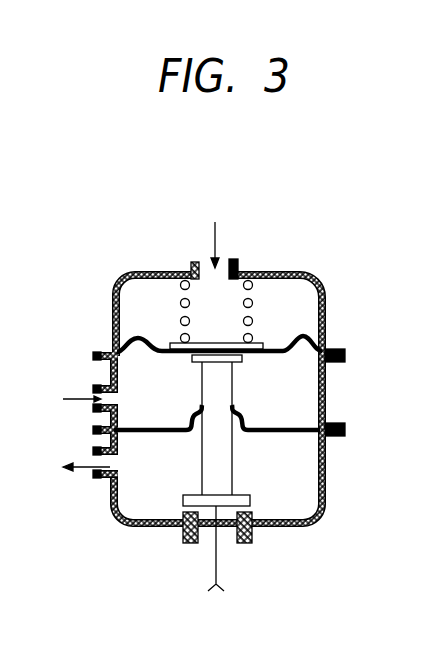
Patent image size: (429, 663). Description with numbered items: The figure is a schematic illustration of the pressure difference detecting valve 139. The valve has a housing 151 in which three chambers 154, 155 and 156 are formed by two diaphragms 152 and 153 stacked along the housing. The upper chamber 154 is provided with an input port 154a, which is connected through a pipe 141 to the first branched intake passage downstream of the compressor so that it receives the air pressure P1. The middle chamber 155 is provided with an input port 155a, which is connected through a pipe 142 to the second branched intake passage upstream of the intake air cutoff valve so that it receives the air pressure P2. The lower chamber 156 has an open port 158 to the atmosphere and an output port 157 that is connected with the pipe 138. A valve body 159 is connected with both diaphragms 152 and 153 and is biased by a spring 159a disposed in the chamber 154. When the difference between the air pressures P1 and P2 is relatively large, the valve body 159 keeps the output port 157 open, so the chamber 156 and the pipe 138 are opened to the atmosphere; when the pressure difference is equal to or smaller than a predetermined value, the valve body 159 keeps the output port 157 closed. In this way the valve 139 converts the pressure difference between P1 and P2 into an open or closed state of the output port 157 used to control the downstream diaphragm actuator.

The pipe 138 is at (217, 566).
The pressure difference detecting valve 139 is at (327, 249).
The pipe 141 is at (222, 242).
The pipe 142 is at (68, 399).
The housing 151 is at (119, 270).
The diaphragm 152 is at (274, 356).
The diaphragm 153 is at (274, 434).
The chamber 154 is at (308, 306).
The input port 154a is at (220, 281).
The chamber 155 is at (308, 403).
The input port 155a is at (93, 404).
The chamber 156 is at (308, 488).
The output port 157 is at (208, 541).
The open port 158 is at (100, 476).
The valve body 159 is at (181, 500).
The spring 159a is at (179, 302).
The air pressure P1 is at (220, 228).
The air pressure P2 is at (65, 404).